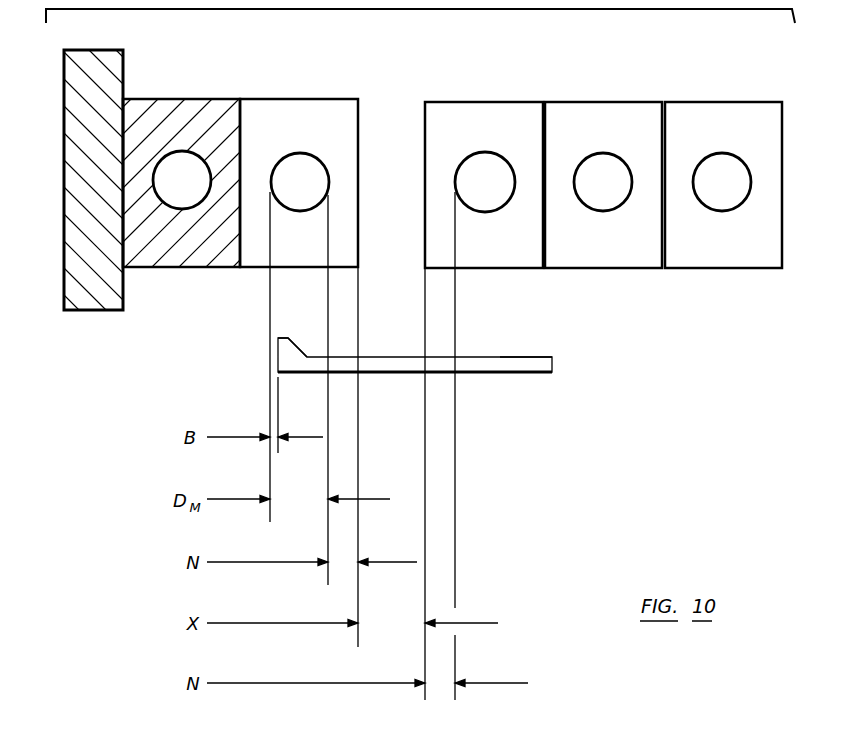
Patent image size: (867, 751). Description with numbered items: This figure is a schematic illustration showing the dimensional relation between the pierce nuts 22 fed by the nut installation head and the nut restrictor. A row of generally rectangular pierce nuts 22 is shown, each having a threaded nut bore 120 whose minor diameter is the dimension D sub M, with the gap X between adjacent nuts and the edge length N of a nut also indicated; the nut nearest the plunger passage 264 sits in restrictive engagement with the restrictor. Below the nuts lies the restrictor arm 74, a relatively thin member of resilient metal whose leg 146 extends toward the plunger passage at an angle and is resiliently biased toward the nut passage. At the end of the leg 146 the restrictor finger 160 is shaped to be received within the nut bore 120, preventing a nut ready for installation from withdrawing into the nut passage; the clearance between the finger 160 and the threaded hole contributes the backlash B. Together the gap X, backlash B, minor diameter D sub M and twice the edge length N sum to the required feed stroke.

The pierce nuts 22 is at (252, 104).
The plunger passage 264 is at (124, 304).
The nut bores 120 is at (472, 168).
The restrictor finger 160 is at (278, 352).
The leg 146 is at (530, 358).
The restrictor arm 74 is at (552, 365).